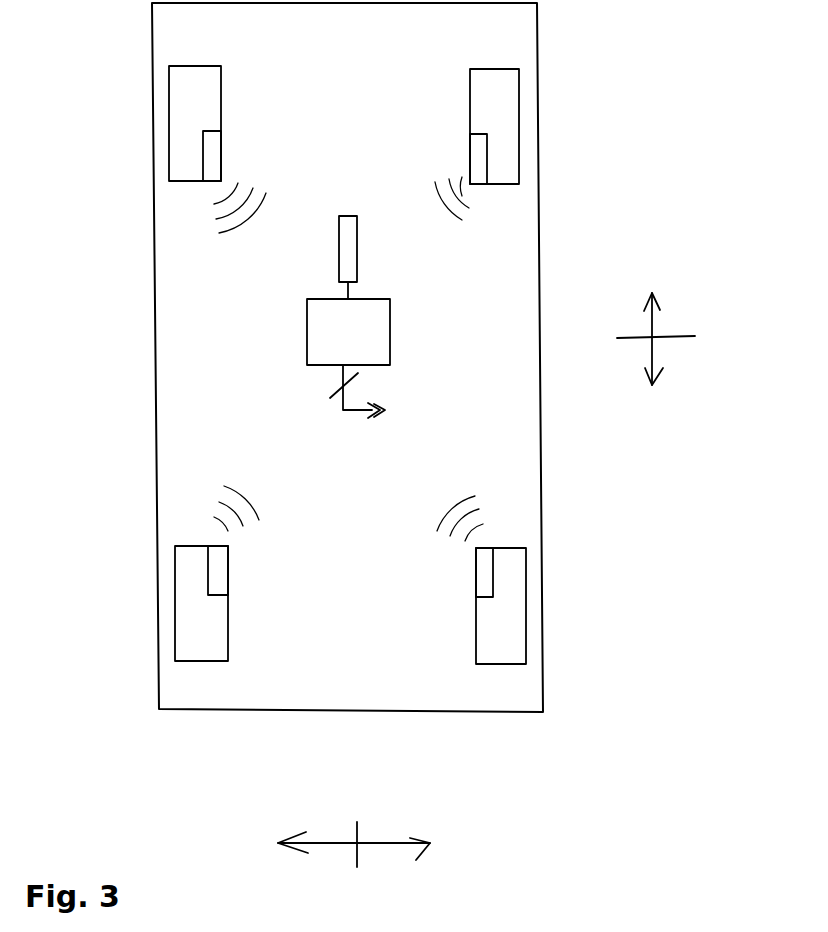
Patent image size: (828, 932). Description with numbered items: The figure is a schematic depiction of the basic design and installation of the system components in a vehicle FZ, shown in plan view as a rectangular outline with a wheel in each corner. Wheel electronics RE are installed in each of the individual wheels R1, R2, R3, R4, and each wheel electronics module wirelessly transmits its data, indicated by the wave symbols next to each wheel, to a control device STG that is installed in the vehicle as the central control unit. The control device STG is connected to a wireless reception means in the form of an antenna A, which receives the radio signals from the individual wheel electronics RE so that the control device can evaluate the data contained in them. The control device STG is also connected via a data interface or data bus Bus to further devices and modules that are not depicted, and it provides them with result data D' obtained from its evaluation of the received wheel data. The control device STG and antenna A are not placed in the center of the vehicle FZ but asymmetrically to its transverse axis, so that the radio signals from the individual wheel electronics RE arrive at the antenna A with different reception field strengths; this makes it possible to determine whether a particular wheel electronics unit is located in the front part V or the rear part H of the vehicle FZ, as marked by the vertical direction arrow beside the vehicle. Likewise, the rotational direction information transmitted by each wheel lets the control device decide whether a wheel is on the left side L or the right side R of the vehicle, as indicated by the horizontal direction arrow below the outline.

The vehicle FZ is at (433, 711).
The wheel R1 is at (180, 103).
The wheel R2 is at (513, 115).
The wheel R3 is at (517, 613).
The wheel R4 is at (185, 622).
The wheel electronics RE is at (216, 161).
The antenna A is at (352, 255).
The control device STG is at (348, 332).
The data bus Bus is at (333, 394).
The result data D' is at (412, 405).
The front part V is at (656, 315).
The rear part H is at (649, 439).
The left side L is at (331, 845).
The right side R is at (460, 851).